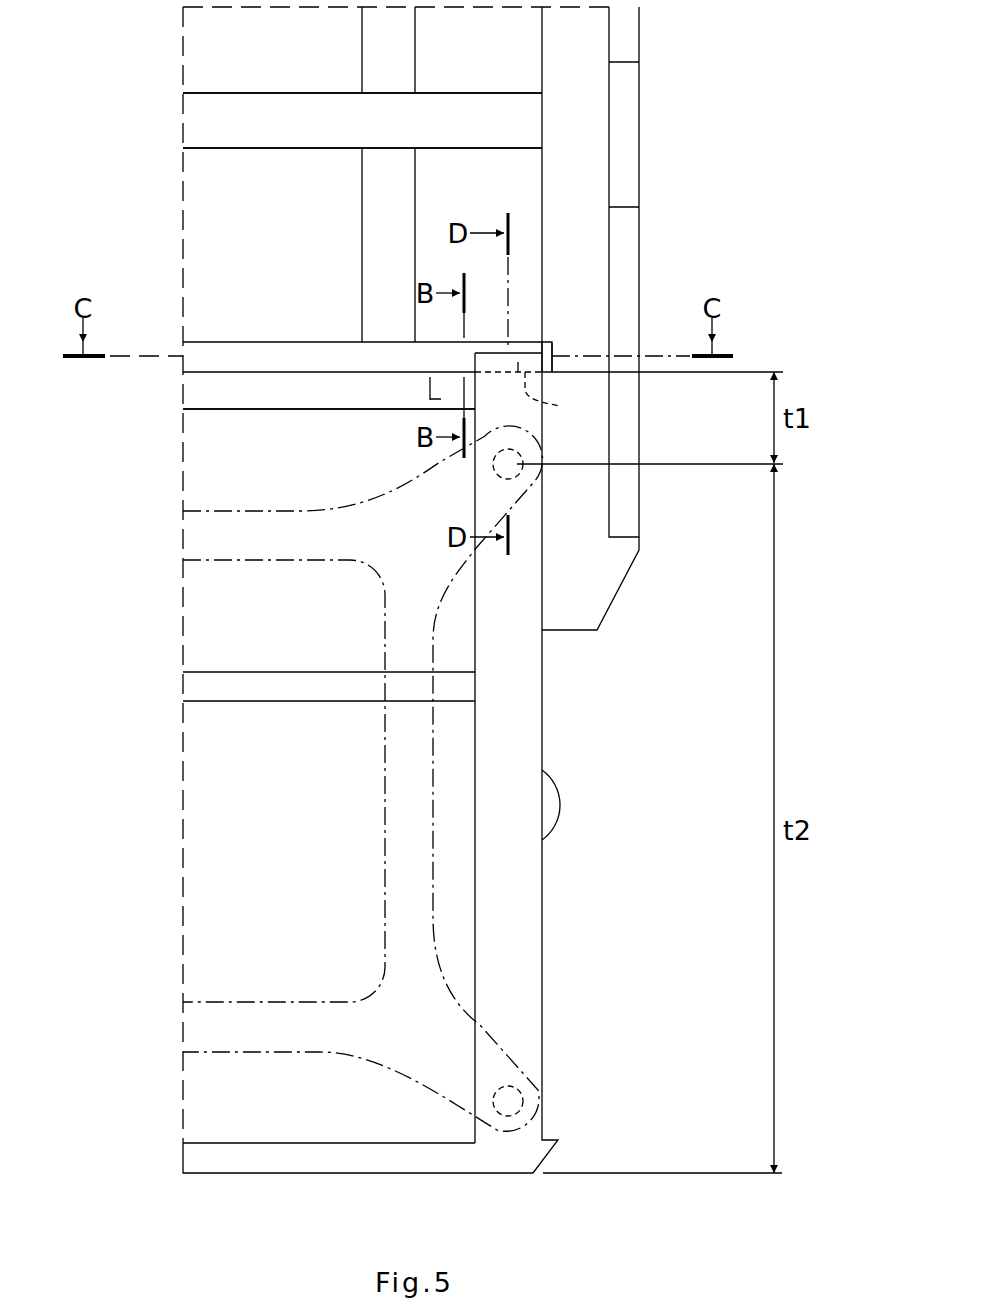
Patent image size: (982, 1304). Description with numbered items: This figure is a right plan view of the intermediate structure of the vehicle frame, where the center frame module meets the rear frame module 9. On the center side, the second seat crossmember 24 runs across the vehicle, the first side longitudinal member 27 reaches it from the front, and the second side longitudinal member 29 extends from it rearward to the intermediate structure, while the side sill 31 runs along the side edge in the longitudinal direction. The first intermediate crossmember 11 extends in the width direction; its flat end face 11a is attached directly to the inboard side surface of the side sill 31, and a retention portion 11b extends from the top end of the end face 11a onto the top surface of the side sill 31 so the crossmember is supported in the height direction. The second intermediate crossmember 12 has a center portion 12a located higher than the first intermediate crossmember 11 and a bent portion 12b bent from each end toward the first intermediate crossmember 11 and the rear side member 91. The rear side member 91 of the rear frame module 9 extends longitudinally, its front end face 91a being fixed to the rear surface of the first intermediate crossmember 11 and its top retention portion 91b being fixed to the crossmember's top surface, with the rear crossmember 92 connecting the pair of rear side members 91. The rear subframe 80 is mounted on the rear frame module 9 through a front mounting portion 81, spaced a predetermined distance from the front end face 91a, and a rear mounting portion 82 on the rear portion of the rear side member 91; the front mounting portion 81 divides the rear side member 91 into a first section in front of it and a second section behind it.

The rear frame module 9 is at (562, 750).
The first intermediate crossmember 11 is at (257, 355).
The end face 11a is at (546, 346).
The retention portion 11b is at (554, 363).
The second intermediate crossmember 12 is at (236, 418).
The center portion 12a is at (280, 395).
The bent portion 12b is at (430, 398).
The second seat crossmember 24 is at (268, 128).
The first side longitudinal member 27 is at (383, 50).
The second side longitudinal member 29 is at (385, 242).
The side sill 31 is at (652, 140).
The rear subframe 80 is at (433, 867).
The front mounting portion 81 is at (518, 470).
The rear mounting portion 82 is at (523, 1100).
The rear side member 91 is at (518, 684).
The front end face 91a is at (560, 406).
The top retention portion 91b is at (518, 362).
The rear crossmember 92 is at (313, 688).